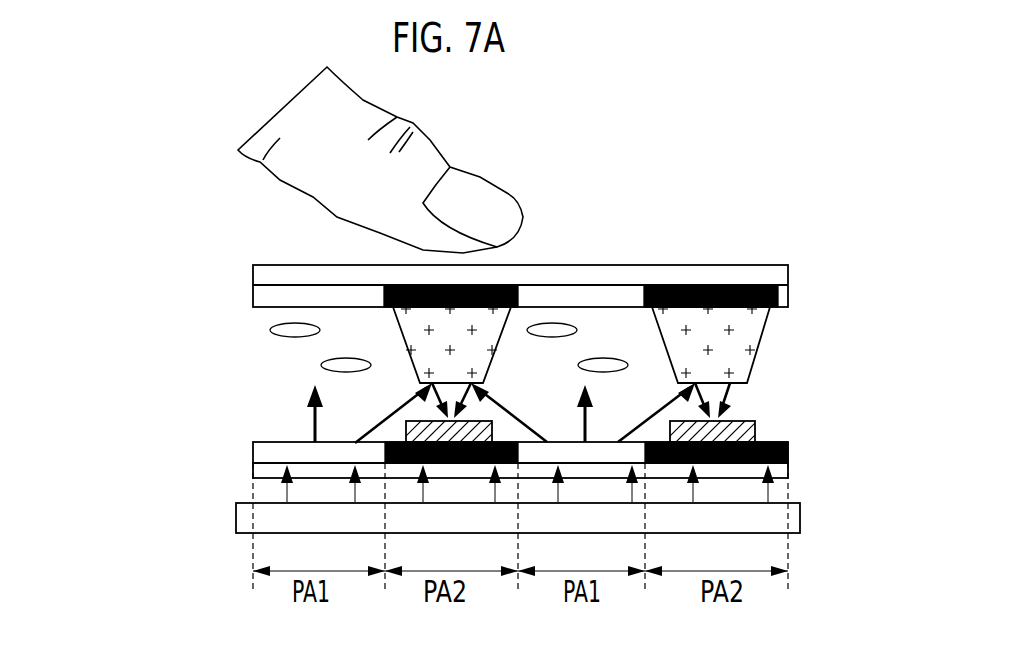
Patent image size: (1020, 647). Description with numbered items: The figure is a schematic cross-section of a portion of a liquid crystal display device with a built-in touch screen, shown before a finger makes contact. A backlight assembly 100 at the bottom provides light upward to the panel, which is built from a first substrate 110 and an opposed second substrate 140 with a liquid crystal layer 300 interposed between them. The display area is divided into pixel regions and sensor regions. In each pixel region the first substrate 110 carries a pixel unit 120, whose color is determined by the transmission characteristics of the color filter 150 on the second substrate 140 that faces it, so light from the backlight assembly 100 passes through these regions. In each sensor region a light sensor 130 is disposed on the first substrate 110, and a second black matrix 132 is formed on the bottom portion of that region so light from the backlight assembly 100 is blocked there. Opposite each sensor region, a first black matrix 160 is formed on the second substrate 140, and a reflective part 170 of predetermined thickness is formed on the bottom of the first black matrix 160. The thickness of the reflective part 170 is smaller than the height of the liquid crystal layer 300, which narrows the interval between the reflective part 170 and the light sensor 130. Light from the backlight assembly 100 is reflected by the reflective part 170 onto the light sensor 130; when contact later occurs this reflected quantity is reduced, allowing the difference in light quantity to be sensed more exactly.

The backlight assembly 100 is at (247, 520).
The first substrate 110 is at (262, 473).
The pixel unit 120 is at (263, 453).
The light sensor 130 is at (413, 443).
The second black matrix 132 is at (380, 442).
The second substrate 140 is at (753, 278).
The color filter 150 is at (265, 297).
The first black matrix 160 is at (507, 305).
The reflective part 170 is at (498, 372).
The liquid crystal layer 300 is at (264, 342).